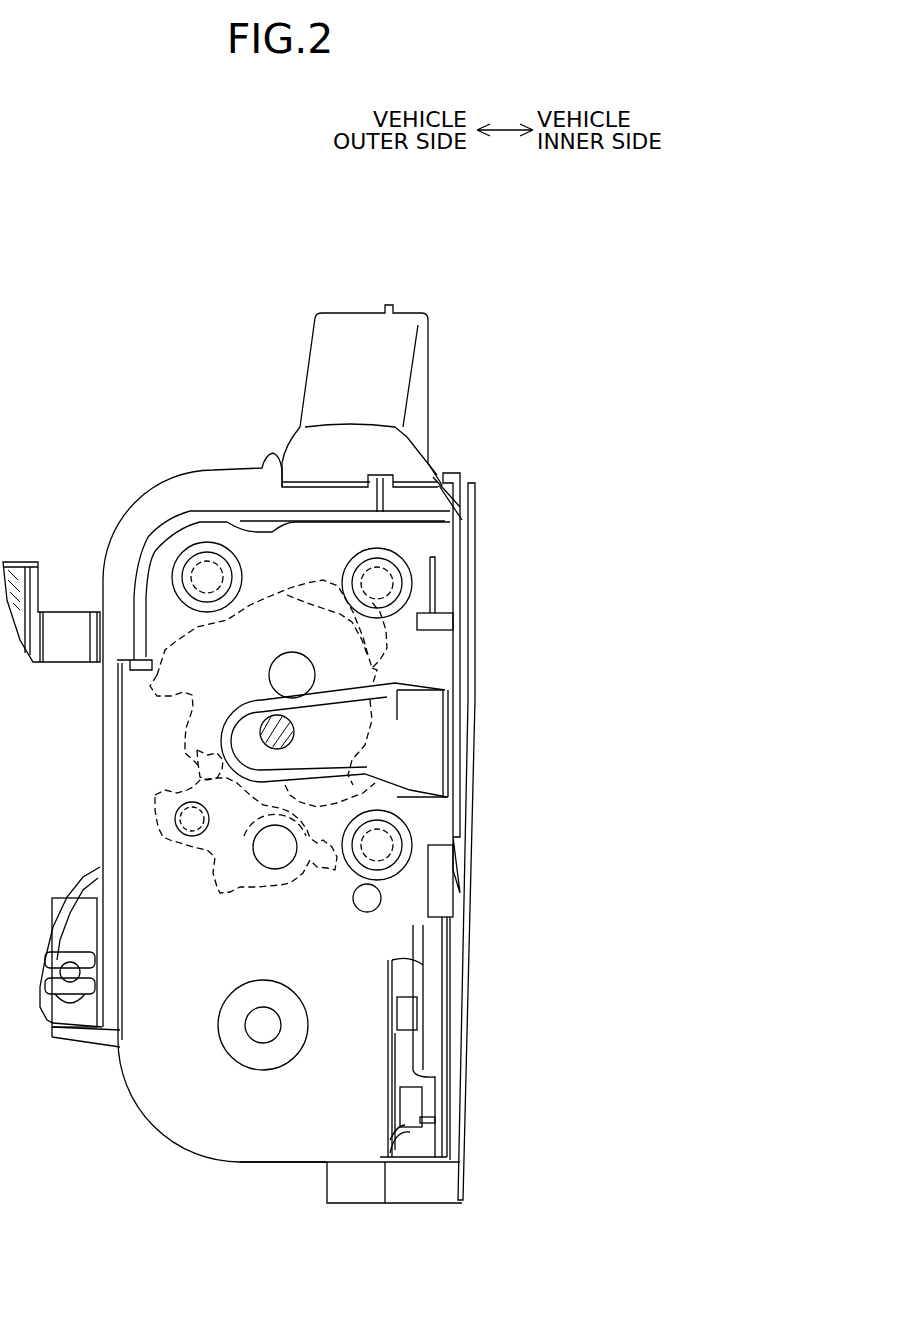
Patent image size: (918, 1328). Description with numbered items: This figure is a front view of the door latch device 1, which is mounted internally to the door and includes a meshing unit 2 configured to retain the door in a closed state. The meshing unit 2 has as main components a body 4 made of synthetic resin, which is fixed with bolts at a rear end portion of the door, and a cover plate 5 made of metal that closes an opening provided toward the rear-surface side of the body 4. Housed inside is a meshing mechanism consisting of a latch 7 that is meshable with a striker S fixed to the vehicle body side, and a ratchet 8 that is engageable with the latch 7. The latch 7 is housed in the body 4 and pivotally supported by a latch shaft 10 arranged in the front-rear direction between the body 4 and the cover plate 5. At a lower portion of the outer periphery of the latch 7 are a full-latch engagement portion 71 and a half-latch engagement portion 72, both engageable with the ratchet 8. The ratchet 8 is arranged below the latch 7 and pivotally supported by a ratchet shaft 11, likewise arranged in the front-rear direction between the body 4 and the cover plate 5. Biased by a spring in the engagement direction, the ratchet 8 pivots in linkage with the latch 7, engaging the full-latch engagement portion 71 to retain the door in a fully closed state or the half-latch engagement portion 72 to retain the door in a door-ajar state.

The door latch device 1 is at (514, 281).
The meshing unit 2 is at (476, 746).
The body 4 is at (458, 817).
The cover plate 5 is at (247, 1145).
The latch 7 is at (267, 597).
The full-latch engagement portion 71 is at (193, 778).
The half-latch engagement portion 72 is at (160, 706).
The ratchet 8 is at (172, 838).
The latch shaft 10 is at (315, 672).
The ratchet shaft 11 is at (283, 868).
The striker S is at (262, 726).